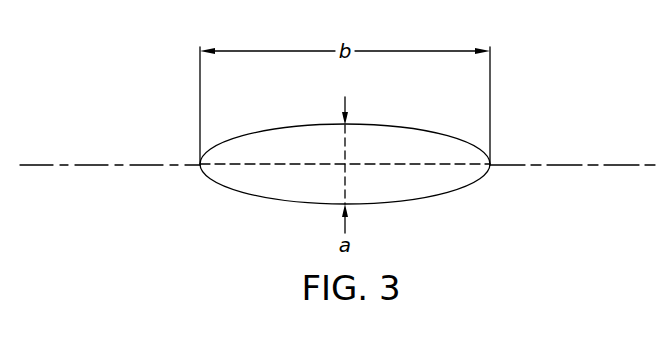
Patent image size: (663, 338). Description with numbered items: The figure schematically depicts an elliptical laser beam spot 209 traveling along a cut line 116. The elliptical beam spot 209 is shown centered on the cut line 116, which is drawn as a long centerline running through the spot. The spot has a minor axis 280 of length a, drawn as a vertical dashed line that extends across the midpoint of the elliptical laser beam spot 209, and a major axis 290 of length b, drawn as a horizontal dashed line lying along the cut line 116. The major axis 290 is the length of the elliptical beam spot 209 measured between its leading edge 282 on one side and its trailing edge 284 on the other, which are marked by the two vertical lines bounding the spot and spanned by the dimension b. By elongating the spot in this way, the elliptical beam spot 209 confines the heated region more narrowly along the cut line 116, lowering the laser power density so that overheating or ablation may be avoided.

The cut line 116 is at (78, 165).
The elliptical laser beam spot 209 is at (280, 126).
The minor axis 280 is at (348, 170).
The leading edge 282 is at (490, 102).
The trailing edge 284 is at (200, 102).
The major axis 290 is at (452, 164).